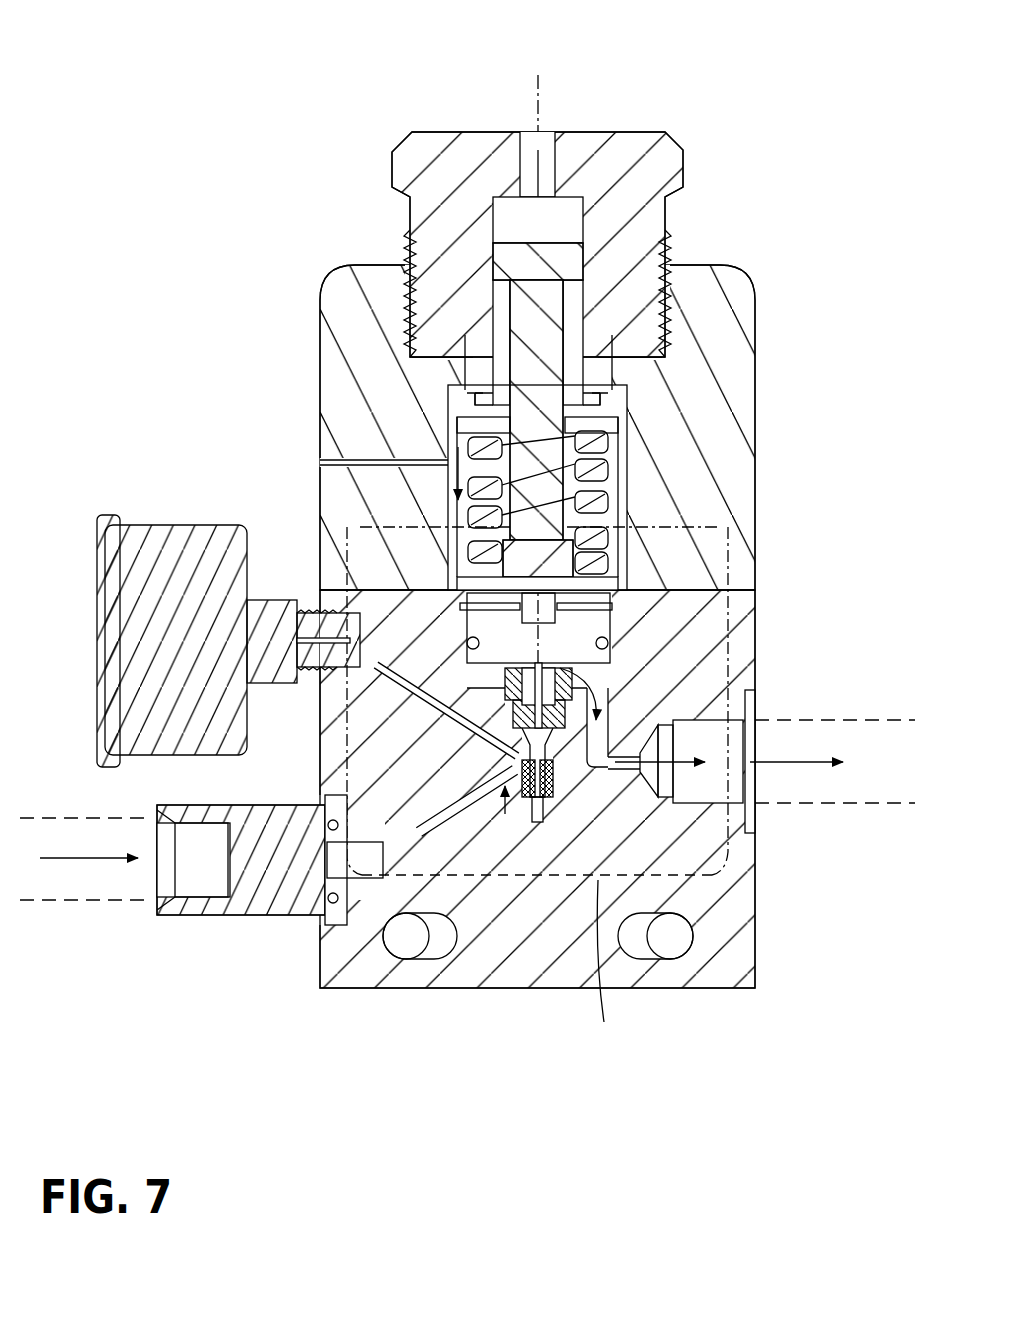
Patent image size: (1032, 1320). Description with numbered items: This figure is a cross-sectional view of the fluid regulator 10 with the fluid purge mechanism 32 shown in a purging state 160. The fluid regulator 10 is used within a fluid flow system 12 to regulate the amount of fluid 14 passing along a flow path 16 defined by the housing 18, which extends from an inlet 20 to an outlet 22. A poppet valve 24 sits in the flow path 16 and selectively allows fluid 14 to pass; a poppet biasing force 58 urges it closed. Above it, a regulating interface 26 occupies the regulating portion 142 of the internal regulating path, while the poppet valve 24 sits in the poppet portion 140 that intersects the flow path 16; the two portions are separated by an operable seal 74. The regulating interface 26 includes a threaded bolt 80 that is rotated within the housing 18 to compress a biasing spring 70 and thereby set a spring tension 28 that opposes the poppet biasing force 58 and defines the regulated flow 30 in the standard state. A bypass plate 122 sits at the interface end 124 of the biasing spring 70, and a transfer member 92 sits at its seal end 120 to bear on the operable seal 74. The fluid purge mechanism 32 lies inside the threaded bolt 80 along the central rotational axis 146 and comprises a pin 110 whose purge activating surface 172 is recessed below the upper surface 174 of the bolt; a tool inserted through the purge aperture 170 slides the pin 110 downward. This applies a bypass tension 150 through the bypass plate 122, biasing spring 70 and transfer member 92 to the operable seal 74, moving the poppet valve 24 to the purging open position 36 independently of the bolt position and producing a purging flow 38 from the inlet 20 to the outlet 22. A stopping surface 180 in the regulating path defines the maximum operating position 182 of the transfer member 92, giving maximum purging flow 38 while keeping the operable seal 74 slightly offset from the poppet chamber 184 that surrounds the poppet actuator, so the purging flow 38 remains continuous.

The fluid regulator 10 is at (467, 542).
The fluid flow system 12 is at (100, 806).
The fluid 14 is at (100, 858).
The flow path 16 is at (490, 790).
The housing 18 is at (528, 531).
The inlet 20 is at (360, 912).
The outlet 22 is at (700, 790).
The poppet valve 24 is at (566, 786).
The regulating interface 26 is at (516, 278).
The spring tension 28 is at (448, 477).
The regulated flow 30 is at (790, 763).
The fluid purge mechanism 32 is at (592, 292).
The purging open position 36 is at (492, 382).
The purging flow 38 is at (602, 737).
The poppet biasing force 58 is at (505, 814).
The biasing spring 70 is at (650, 480).
The operable seal 74 is at (585, 632).
The threaded bolt 80 is at (410, 190).
The transfer member 92 is at (527, 562).
The pin 110 is at (630, 398).
The seal end 120 is at (600, 498).
The bypass plate 122 is at (470, 423).
The interface end 124 is at (597, 440).
The poppet portion 140 is at (625, 708).
The regulating portion 142 is at (636, 466).
The central rotational axis 146 is at (538, 95).
The bypass tension 150 is at (580, 195).
The purge state 160 is at (772, 300).
The purge aperture 170 is at (560, 130).
The purge activating surface 172 is at (585, 293).
The upper surface 174 is at (444, 132).
The stopping surface 180 is at (715, 528).
The maximum operating position 182 is at (548, 822).
The poppet chamber 184 is at (468, 678).